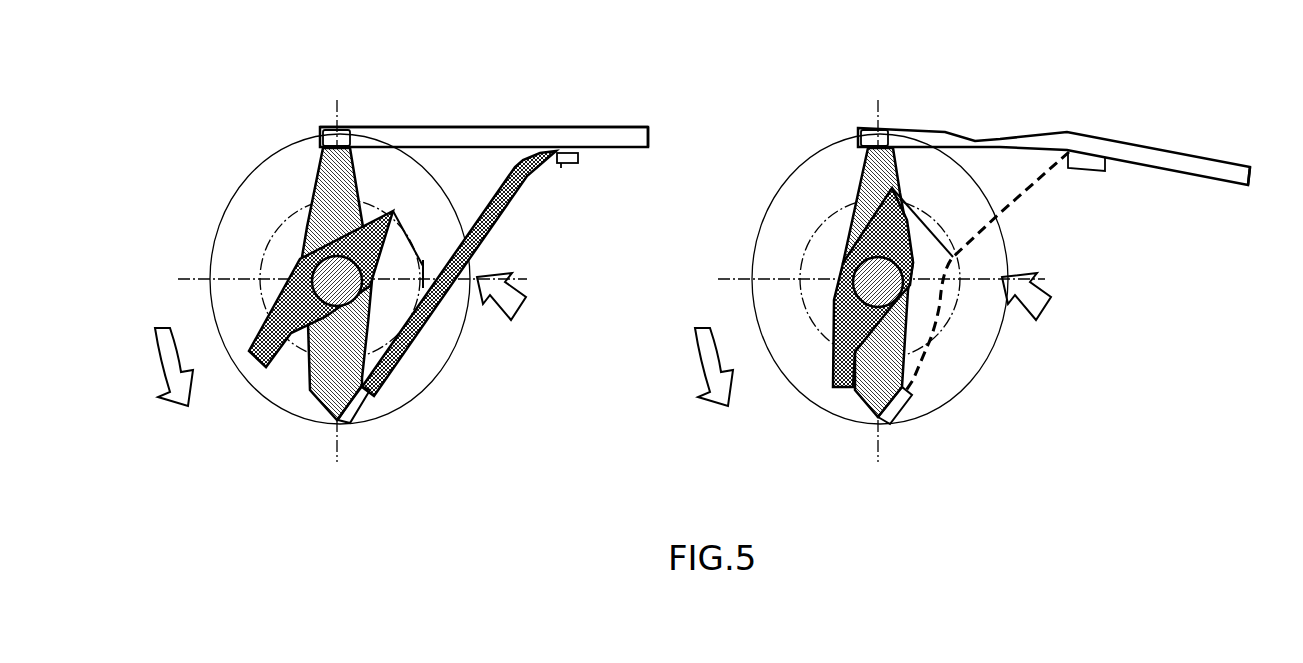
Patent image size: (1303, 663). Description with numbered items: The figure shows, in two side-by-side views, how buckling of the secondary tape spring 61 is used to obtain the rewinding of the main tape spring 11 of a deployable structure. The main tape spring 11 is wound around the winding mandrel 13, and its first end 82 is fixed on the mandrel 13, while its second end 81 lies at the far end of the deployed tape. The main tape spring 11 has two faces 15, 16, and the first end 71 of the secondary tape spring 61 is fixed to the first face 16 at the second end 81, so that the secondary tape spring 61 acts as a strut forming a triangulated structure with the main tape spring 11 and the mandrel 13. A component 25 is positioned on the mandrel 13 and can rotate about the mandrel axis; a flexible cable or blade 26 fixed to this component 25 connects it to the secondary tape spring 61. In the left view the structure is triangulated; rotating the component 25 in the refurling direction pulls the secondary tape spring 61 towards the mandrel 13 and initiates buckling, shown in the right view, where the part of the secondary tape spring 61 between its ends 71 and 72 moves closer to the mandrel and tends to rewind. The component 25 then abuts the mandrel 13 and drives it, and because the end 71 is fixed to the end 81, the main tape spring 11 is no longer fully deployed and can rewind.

The main tape spring 11 is at (485, 137).
The winding mandrel 13 is at (313, 395).
The face of the main tape spring 15 is at (530, 127).
The first face of the main tape spring 16 is at (597, 160).
The component 25 is at (256, 328).
The flexible cable or blade 26 is at (430, 300).
The secondary tape spring 61 is at (455, 295).
The first end of the secondary tape spring 71 is at (561, 165).
The second end of the secondary tape spring 72 is at (368, 392).
The second end of the main tape spring 81 is at (657, 128).
The first end of the main tape spring 82 is at (347, 143).